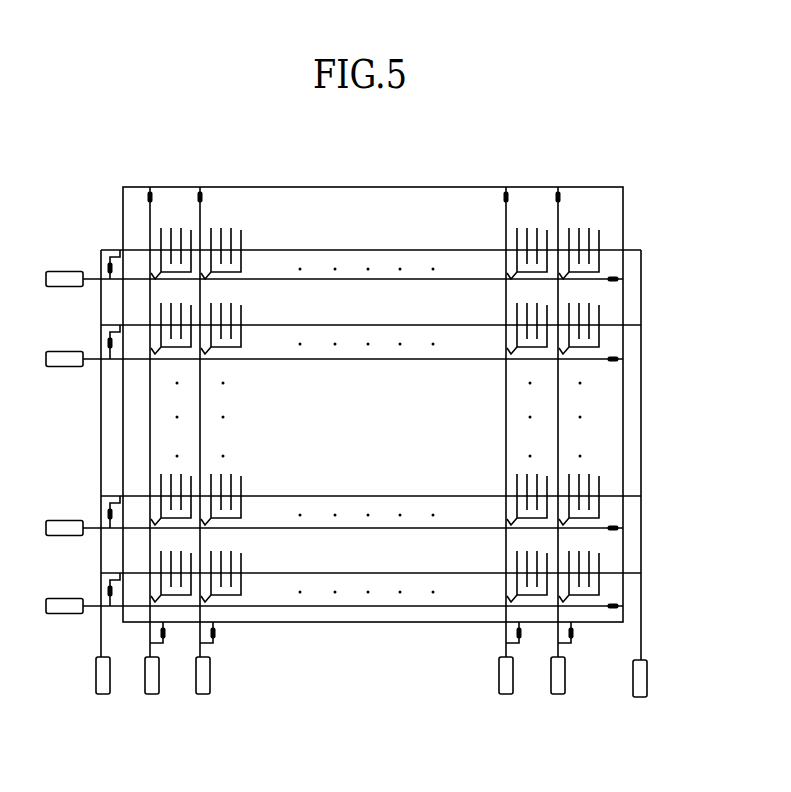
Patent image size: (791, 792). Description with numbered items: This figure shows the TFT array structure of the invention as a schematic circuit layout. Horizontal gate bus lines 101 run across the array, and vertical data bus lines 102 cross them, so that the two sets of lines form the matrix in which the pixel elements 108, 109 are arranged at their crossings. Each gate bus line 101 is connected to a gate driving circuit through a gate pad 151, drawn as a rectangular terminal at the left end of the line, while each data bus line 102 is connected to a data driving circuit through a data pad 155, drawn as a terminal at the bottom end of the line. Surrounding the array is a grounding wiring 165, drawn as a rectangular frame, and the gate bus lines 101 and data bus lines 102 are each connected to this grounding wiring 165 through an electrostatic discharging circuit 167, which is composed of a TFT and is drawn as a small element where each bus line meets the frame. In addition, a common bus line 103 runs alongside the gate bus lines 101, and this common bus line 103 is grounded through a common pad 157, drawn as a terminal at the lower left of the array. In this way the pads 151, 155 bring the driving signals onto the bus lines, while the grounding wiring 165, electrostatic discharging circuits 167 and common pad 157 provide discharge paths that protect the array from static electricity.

The gate bus line 101 is at (345, 607).
The data bus line 102 is at (150, 403).
The common bus line 103 is at (443, 573).
The pixel electrode 108 is at (600, 230).
The common electrode 109 is at (601, 258).
The gate pad 151 is at (62, 606).
The data pad 155 is at (207, 673).
The common pad 157 is at (99, 680).
The grounding wiring 165 is at (377, 187).
The electrostatic discharging circuit 167 is at (200, 192).